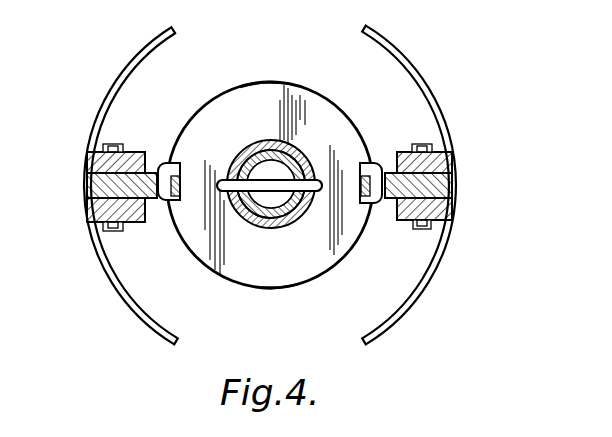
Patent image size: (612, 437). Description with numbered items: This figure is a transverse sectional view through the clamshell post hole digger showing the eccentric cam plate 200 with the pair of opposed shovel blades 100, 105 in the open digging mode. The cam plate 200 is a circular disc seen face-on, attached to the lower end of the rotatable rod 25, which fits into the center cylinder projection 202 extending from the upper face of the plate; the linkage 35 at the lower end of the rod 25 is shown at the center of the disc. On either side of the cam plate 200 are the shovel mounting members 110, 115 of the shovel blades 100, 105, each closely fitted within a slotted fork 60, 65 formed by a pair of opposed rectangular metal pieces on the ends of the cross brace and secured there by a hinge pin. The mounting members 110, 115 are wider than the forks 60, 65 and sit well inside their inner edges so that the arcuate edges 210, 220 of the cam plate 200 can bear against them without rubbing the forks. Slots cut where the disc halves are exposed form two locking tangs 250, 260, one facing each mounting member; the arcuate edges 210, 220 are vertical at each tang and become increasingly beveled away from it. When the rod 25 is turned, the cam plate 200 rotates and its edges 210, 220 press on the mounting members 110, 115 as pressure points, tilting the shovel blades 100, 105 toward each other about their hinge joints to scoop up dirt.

The shovel blade 100 is at (147, 50).
The shovel blade 105 is at (408, 62).
The eccentric cam plate 200 is at (367, 128).
The arcuate edge 210 is at (260, 82).
The arcuate edge 220 is at (283, 290).
The slotted fork 60 is at (85, 158).
The slotted fork 65 is at (453, 165).
The shovel mounting member 110 is at (87, 185).
The shovel mounting member 115 is at (453, 190).
The locking tang 260 is at (166, 163).
The locking tang 250 is at (370, 203).
The center cylinder projection 202 is at (262, 230).
The linkage 35 is at (300, 148).
The rotatable rod 25 is at (298, 228).